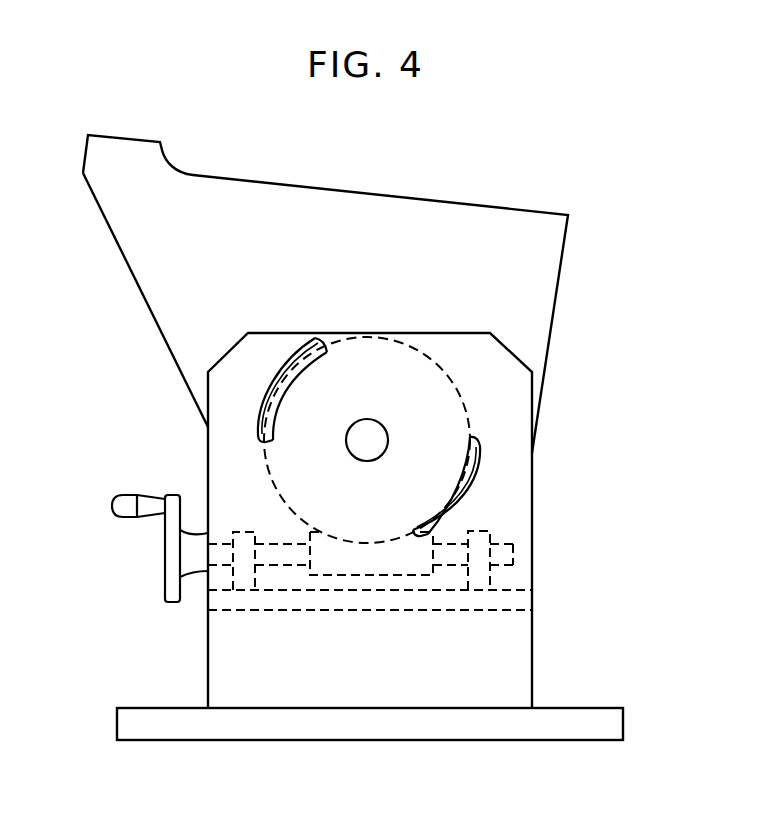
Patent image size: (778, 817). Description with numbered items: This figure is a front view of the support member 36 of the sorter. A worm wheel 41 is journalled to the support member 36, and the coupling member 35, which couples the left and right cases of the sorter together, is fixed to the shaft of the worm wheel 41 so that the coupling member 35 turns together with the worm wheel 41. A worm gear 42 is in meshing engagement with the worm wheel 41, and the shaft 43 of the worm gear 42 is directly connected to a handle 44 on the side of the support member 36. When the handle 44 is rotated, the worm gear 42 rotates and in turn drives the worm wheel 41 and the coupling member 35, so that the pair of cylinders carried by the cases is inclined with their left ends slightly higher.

The coupling member 35 is at (152, 315).
The support member 36 is at (532, 502).
The worm wheel 41 is at (300, 450).
The worm gear 42 is at (375, 562).
The shaft 43 is at (278, 565).
The handle 44 is at (163, 603).